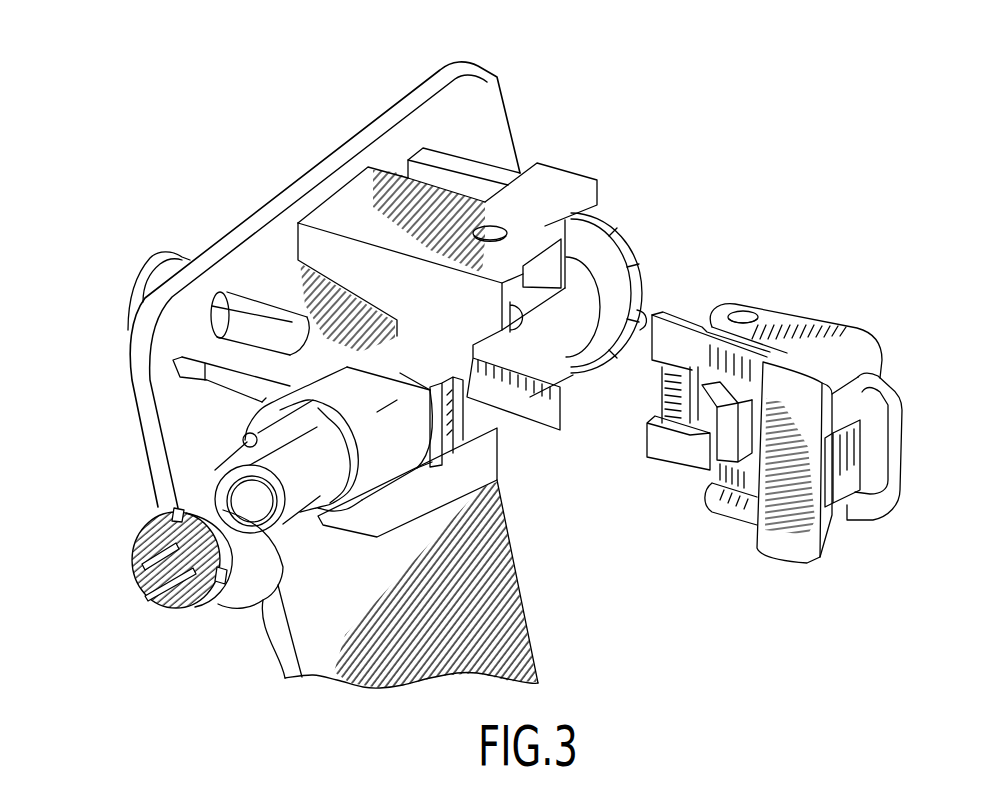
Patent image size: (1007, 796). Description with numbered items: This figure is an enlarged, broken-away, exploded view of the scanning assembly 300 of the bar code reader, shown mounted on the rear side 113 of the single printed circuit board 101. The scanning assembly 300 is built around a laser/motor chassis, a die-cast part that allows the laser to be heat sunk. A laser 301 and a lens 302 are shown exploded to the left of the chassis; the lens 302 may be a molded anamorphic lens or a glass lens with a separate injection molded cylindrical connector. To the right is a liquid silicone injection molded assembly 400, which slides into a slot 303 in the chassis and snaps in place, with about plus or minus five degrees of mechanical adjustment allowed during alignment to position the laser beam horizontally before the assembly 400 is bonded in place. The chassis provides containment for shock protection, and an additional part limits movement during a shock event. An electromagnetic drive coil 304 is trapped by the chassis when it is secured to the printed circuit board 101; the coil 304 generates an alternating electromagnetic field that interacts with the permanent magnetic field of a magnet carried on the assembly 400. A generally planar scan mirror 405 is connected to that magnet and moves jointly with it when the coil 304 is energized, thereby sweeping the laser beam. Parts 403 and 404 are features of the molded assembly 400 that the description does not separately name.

The printed circuit board 101 is at (485, 83).
The rear side of the PCB 113 is at (349, 590).
The scanning assembly 300 is at (589, 158).
The laser 301 is at (127, 535).
The lens 302 is at (262, 507).
The slot 303 is at (527, 437).
The electromagnetic drive coil 304 is at (598, 257).
The liquid silicone injection molded assembly 400 is at (822, 293).
The bar 403 is at (671, 342).
The base block 404 is at (697, 463).
The scan mirror 405 is at (706, 423).